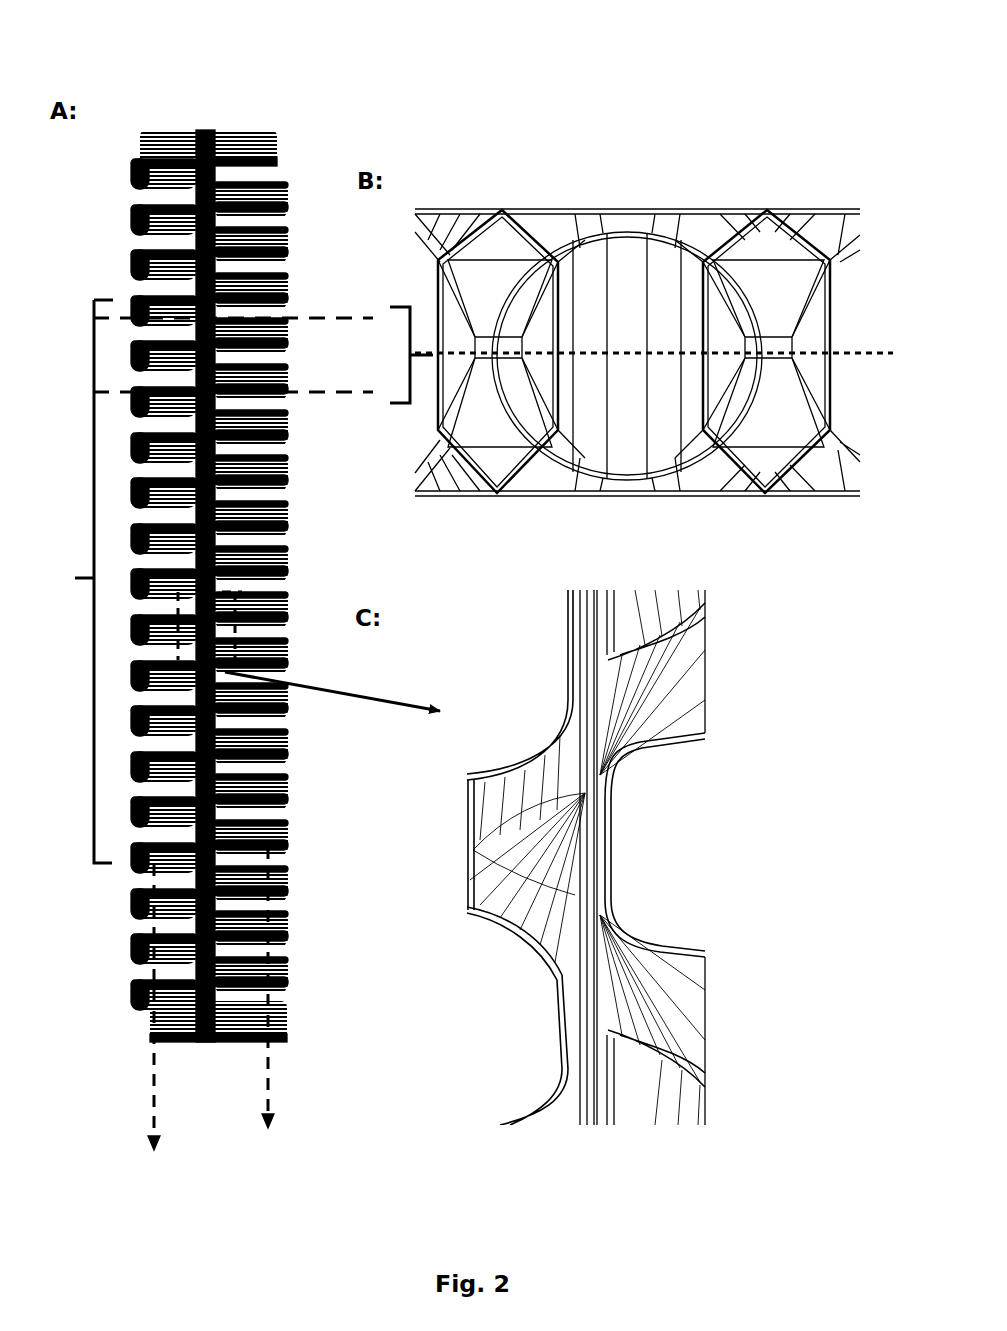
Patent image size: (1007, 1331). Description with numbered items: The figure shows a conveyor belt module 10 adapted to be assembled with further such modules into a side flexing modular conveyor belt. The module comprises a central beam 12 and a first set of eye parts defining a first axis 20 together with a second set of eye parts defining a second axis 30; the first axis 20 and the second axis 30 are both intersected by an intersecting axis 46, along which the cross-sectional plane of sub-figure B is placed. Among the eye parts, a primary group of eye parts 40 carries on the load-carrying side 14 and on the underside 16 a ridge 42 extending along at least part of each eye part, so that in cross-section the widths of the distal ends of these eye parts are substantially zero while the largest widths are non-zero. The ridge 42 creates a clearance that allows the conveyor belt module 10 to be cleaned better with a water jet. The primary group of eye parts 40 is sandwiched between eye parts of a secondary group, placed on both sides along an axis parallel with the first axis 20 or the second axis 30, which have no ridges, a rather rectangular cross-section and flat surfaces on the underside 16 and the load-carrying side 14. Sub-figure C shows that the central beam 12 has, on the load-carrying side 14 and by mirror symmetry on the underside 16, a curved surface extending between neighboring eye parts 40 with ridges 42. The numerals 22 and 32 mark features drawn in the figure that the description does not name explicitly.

The conveyor belt module 10 is at (194, 87).
The central beam 12 is at (200, 956).
The load-carrying side 14 is at (655, 150).
The underside 16 is at (120, 122).
The first axis 20 is at (275, 1160).
The second flow channel 22 is at (268, 1072).
The second axis 30 is at (162, 1160).
The first flow channel 32 is at (154, 1066).
The primary group of eye parts 40 is at (870, 127).
The ridge 42 is at (503, 205).
The intersecting axis 46 is at (873, 353).